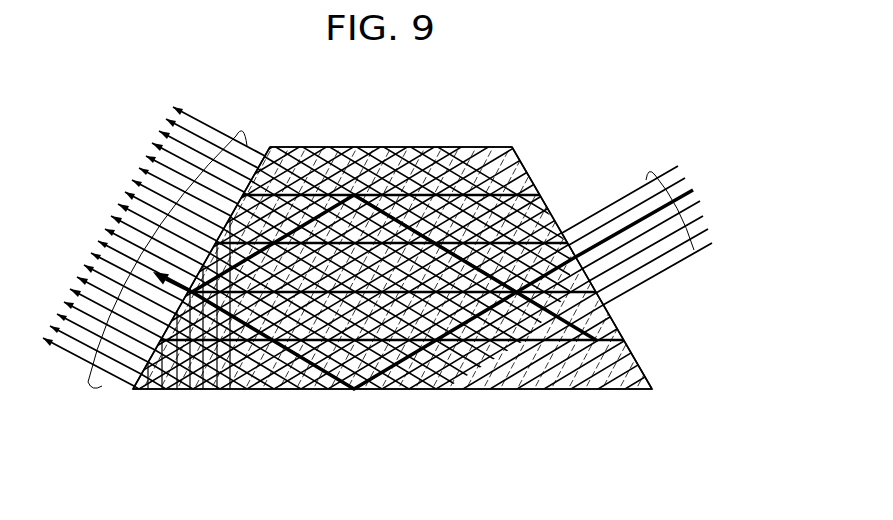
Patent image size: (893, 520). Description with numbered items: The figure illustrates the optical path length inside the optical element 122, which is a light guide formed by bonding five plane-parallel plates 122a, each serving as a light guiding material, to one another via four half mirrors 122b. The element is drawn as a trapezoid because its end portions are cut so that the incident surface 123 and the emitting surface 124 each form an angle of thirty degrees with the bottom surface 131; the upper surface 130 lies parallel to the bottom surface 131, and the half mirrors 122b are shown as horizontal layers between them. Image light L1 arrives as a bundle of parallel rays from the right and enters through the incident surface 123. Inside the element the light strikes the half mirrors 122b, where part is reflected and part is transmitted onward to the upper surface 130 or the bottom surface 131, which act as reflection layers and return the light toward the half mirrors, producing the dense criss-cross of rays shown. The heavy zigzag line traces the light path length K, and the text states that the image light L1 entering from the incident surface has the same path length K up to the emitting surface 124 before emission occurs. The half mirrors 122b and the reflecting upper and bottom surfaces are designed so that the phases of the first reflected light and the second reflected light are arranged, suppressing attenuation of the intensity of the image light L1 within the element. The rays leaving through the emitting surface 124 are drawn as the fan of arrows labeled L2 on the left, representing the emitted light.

The optical element 122 is at (590, 118).
The plane-parallel plate 122a is at (621, 372).
The half mirror 122b is at (563, 347).
The incident surface 123 is at (526, 160).
The emitting surface 124 is at (254, 162).
The upper surface 130 is at (400, 147).
The bottom surface 131 is at (486, 390).
The light path length K is at (381, 386).
The image light L1 is at (694, 250).
The emitted light L2 is at (88, 384).